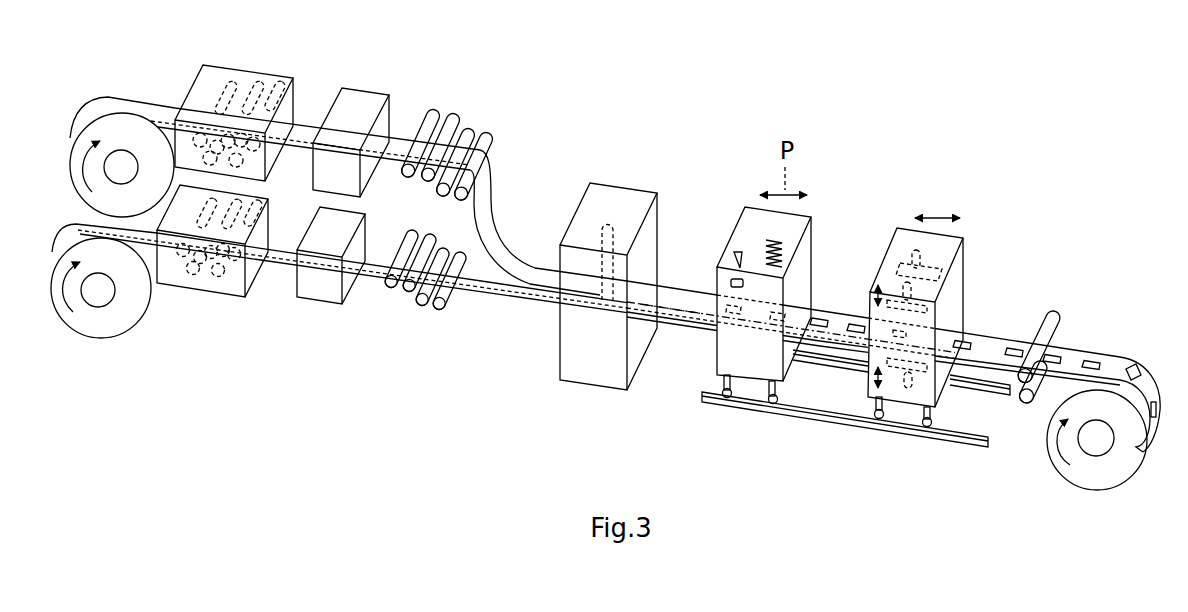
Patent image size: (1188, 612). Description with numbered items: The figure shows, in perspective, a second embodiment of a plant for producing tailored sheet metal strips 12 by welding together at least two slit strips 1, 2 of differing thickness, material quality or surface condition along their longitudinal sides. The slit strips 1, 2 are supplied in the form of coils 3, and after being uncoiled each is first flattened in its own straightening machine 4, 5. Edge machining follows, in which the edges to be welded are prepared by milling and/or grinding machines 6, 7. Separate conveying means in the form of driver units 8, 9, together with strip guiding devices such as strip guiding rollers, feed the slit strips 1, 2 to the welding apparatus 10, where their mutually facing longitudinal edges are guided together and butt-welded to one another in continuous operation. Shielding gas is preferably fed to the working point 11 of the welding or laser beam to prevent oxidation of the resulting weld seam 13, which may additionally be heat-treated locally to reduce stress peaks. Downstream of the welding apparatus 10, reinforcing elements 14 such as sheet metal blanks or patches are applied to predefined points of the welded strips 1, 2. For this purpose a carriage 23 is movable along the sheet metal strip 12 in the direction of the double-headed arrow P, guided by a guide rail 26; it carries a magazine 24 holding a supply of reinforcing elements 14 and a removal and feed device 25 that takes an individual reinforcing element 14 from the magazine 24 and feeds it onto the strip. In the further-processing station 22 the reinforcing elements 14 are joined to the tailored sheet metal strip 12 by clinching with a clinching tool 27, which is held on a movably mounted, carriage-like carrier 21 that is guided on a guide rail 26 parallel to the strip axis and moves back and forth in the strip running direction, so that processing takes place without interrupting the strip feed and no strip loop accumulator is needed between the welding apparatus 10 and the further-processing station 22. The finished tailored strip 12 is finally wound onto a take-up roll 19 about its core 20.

The slit strip 1 is at (162, 107).
The slit strip 2 is at (92, 226).
The coil 3 is at (110, 130).
The straightening machine 4 is at (245, 80).
The straightening machine 5 is at (230, 287).
The milling and/or grinding machine 6 is at (360, 100).
The milling and/or grinding machine 7 is at (320, 297).
The conveying means (driver unit) 8 is at (468, 133).
The conveying means (driver unit) 9 is at (422, 310).
The welding apparatus 10 is at (612, 193).
The working point 11 is at (603, 303).
The tailored sheet metal strip 12 is at (701, 282).
The weld seam 13 is at (663, 303).
The reinforcing element 14 is at (822, 315).
The take-up roll 19 is at (1070, 473).
The roll core 20 is at (1097, 452).
The movably mounted carrier 21 is at (953, 293).
The further-processing station 22 is at (905, 233).
The carriage 23 is at (808, 243).
The magazine 24 is at (770, 237).
The removal and feed device 25 is at (738, 250).
The guide rail 26 is at (836, 420).
The clinching tool 27 is at (902, 268).